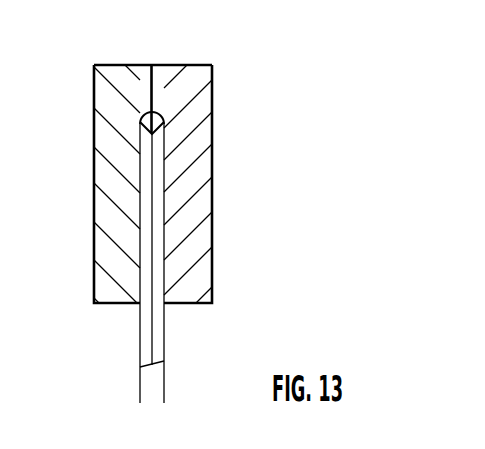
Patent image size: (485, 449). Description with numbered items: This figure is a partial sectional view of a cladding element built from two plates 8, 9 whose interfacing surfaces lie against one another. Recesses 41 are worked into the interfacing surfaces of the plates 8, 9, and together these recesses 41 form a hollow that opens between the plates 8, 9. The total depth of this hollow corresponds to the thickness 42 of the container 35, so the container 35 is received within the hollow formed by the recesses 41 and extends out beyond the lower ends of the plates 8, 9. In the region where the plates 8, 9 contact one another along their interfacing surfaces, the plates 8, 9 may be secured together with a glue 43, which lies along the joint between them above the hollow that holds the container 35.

The plate 8 is at (208, 93).
The plate 9 is at (95, 100).
The container 35 is at (158, 205).
The recesses 41 is at (140, 120).
The thickness 42 is at (190, 398).
The glue 43 is at (151, 65).